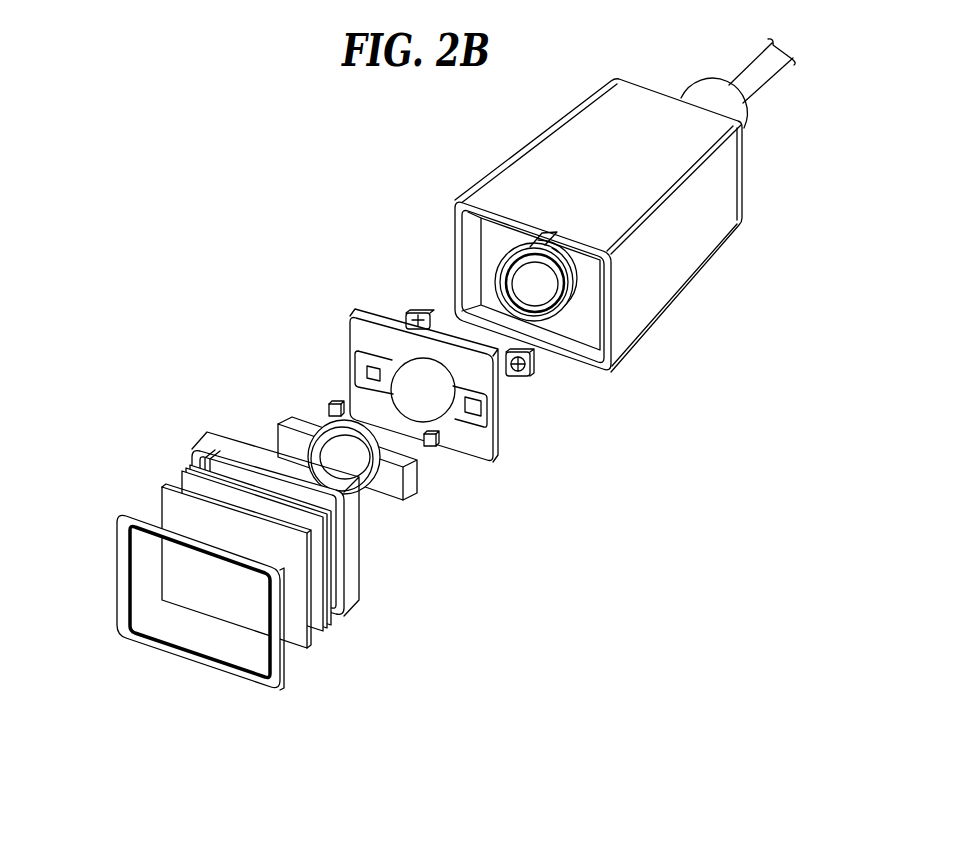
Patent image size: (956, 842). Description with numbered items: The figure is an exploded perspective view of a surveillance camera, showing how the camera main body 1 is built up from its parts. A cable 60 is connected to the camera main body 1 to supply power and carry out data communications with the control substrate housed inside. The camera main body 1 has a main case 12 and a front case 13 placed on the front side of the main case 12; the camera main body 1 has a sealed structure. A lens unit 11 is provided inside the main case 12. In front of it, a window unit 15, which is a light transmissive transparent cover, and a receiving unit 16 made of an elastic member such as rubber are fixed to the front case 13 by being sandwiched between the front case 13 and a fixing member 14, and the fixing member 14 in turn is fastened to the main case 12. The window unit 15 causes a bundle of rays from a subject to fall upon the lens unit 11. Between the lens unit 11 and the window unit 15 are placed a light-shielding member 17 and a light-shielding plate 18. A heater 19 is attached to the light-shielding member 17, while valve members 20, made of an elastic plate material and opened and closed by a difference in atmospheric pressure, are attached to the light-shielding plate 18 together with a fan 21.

The camera main body 1 is at (278, 258).
The lens unit 11 is at (507, 277).
The main case 12 is at (596, 191).
The front case 13 is at (207, 432).
The fixing member 14 is at (118, 513).
The window unit 15 is at (160, 489).
The receiving unit 16 is at (183, 466).
The light-shielding member 17 is at (397, 493).
The light-shielding plate 18 is at (407, 408).
The heater 19 is at (328, 408).
The valve members 20 is at (367, 372).
The fan 21 is at (410, 313).
The cable 60 is at (758, 62).